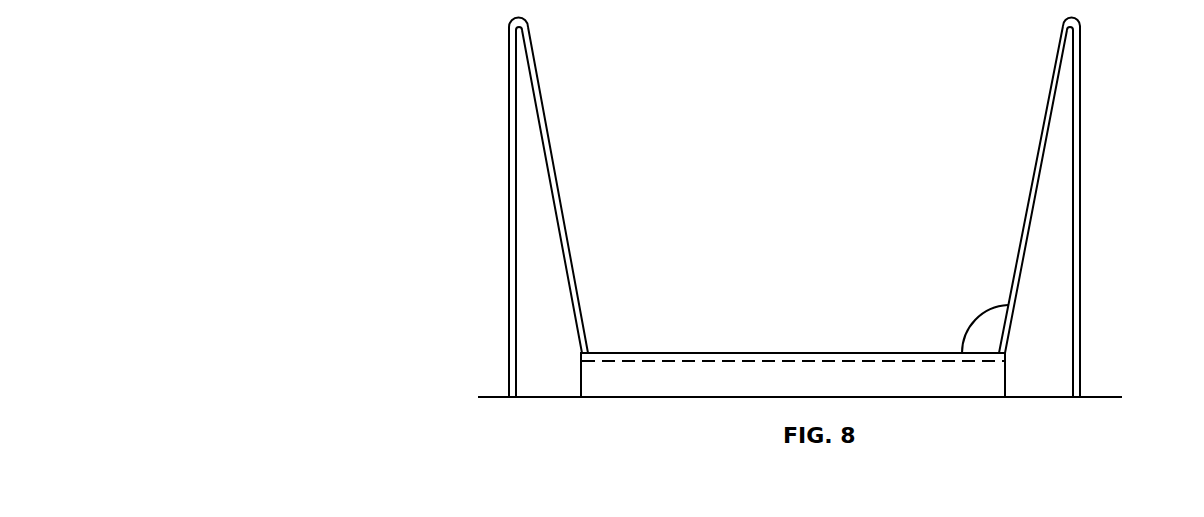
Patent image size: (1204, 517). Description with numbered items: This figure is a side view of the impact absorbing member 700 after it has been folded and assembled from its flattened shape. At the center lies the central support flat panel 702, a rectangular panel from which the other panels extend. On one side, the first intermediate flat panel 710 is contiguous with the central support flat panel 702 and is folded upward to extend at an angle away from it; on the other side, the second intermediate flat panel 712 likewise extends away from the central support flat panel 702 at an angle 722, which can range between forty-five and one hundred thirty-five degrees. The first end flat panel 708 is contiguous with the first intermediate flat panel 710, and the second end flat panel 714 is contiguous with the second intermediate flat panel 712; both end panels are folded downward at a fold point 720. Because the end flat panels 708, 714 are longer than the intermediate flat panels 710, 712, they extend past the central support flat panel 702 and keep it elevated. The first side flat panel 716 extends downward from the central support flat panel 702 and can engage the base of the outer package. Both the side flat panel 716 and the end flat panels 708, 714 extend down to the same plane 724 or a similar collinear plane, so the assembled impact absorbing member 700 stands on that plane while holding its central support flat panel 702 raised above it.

The impact absorbing member 700 is at (714, 228).
The central support flat panel 702 is at (720, 352).
The first end flat panel 708 is at (508, 221).
The first intermediate flat panel 710 is at (547, 129).
The second intermediate flat panel 712 is at (1031, 185).
The second end flat panel 714 is at (1075, 197).
The first side flat panel 716 is at (999, 375).
The fold point 720 is at (509, 24).
The angle 722 is at (975, 320).
The plane 724 is at (490, 398).